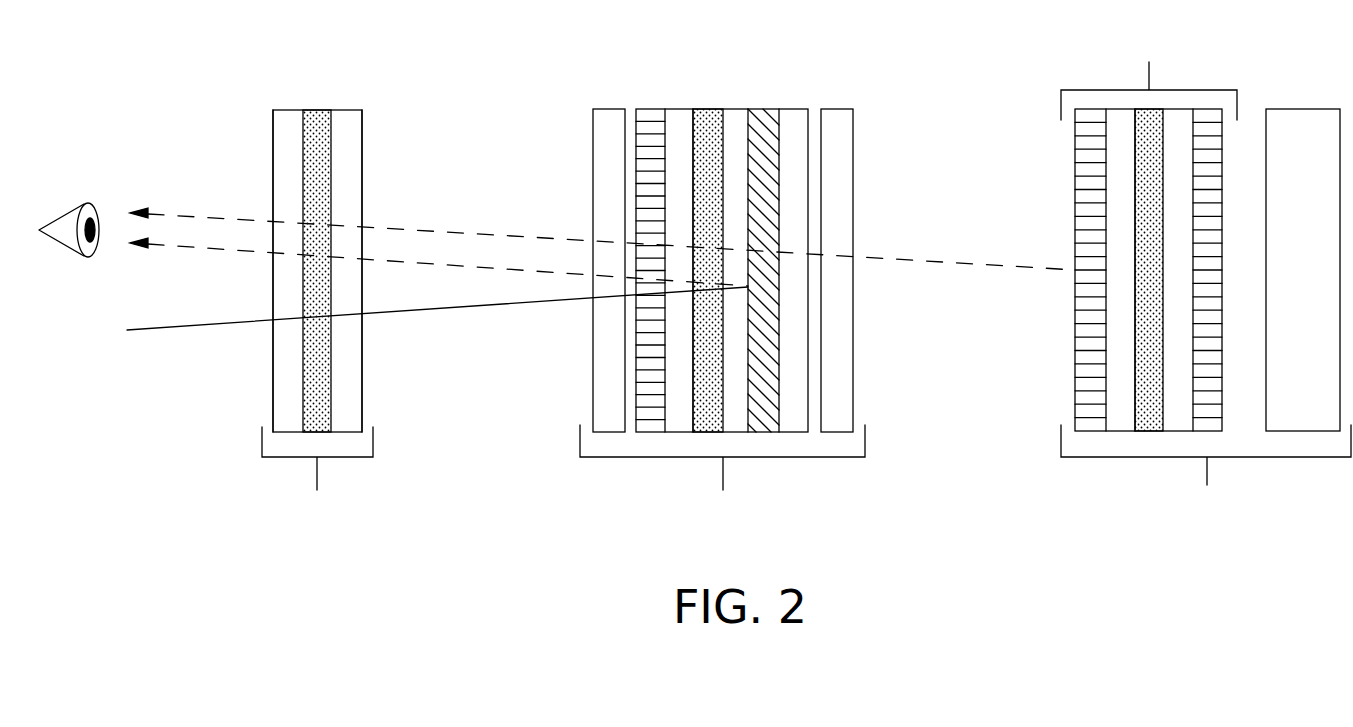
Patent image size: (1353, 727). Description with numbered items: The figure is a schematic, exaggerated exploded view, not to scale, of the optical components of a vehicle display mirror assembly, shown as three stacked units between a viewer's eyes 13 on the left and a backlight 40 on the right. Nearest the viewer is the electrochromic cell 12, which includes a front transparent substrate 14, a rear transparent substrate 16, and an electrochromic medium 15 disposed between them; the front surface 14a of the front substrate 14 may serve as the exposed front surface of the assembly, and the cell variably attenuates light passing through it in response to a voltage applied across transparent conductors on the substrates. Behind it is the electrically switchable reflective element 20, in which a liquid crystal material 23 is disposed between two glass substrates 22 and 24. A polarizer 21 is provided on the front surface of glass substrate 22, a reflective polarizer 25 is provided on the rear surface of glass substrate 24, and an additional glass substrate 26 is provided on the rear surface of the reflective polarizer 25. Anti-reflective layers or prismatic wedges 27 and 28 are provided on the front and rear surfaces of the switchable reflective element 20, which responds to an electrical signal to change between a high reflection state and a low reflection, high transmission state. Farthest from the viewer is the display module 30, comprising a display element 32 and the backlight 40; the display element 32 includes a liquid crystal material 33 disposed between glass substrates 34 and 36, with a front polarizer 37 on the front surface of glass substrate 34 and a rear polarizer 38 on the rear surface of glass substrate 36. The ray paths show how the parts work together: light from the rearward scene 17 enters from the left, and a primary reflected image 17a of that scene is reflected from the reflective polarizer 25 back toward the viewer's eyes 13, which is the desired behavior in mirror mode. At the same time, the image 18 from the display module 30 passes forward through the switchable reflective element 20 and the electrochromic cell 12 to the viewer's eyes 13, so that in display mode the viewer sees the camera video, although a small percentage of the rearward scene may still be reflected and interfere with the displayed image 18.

The electrochromic cell 12 is at (306, 298).
The viewer's eyes 13 is at (88, 198).
The front transparent substrate 14 is at (280, 168).
The front surface 14a is at (272, 330).
The electrochromic medium 15 is at (317, 122).
The rear transparent substrate 16 is at (350, 168).
The rearward scene 17 is at (155, 325).
The primary reflected image 17a is at (235, 250).
The image from display module 18 is at (215, 213).
The electrically switchable reflective element 20 is at (723, 262).
The polarizer 21 is at (648, 120).
The glass substrate 22 is at (682, 122).
The liquid crystal material 23 is at (707, 122).
The glass substrate 24 is at (733, 122).
The reflective polarizer 25 is at (762, 122).
The additional glass substrate 26 is at (793, 122).
The anti-reflective layer or prismatic wedge 27 is at (602, 397).
The anti-reflective layer or prismatic wedge 28 is at (843, 407).
The display module 30 is at (1185, 275).
The display element 32 is at (1136, 232).
The liquid crystal material 33 is at (1148, 203).
The glass substrate 34 is at (1115, 255).
The glass substrate 36 is at (1183, 326).
The front polarizer 37 is at (1090, 362).
The rear polarizer 38 is at (1200, 403).
The backlight 40 is at (1288, 109).